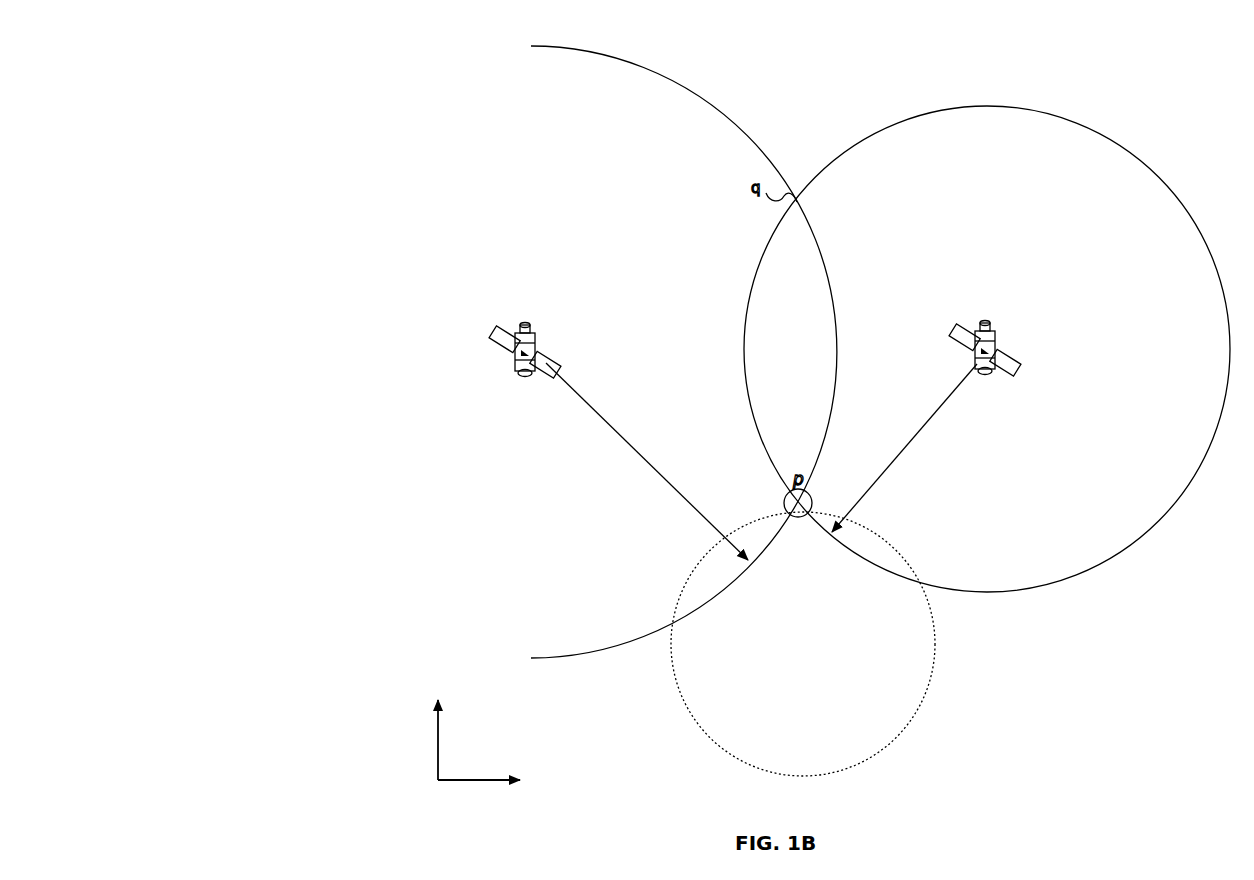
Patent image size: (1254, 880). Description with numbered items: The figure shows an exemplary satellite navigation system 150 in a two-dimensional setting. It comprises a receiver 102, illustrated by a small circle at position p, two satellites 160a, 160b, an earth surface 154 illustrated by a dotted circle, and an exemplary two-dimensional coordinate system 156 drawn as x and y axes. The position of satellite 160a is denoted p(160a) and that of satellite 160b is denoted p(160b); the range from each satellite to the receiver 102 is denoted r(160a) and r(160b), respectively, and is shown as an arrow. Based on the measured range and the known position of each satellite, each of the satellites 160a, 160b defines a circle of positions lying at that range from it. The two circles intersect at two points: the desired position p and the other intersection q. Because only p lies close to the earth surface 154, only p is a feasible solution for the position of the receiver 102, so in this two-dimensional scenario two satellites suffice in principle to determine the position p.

The satellite navigation system 150 is at (285, 38).
The satellite 160a is at (516, 358).
The satellite 160b is at (998, 336).
The receiver 102 is at (784, 500).
The earth surface 154 is at (672, 687).
The two-dimensional coordinate system 156 is at (444, 781).